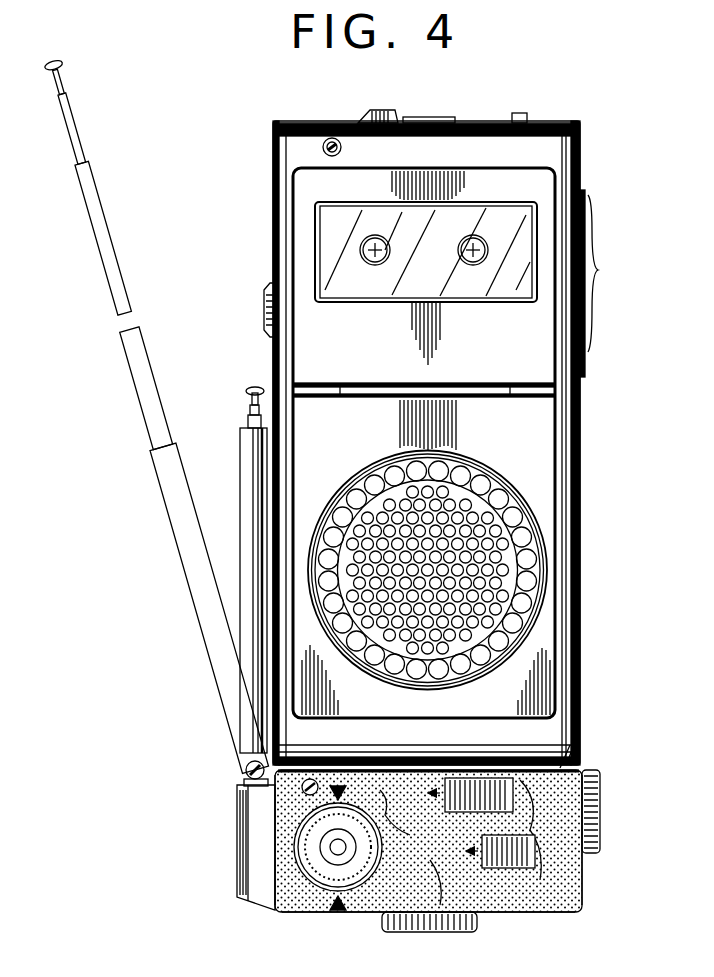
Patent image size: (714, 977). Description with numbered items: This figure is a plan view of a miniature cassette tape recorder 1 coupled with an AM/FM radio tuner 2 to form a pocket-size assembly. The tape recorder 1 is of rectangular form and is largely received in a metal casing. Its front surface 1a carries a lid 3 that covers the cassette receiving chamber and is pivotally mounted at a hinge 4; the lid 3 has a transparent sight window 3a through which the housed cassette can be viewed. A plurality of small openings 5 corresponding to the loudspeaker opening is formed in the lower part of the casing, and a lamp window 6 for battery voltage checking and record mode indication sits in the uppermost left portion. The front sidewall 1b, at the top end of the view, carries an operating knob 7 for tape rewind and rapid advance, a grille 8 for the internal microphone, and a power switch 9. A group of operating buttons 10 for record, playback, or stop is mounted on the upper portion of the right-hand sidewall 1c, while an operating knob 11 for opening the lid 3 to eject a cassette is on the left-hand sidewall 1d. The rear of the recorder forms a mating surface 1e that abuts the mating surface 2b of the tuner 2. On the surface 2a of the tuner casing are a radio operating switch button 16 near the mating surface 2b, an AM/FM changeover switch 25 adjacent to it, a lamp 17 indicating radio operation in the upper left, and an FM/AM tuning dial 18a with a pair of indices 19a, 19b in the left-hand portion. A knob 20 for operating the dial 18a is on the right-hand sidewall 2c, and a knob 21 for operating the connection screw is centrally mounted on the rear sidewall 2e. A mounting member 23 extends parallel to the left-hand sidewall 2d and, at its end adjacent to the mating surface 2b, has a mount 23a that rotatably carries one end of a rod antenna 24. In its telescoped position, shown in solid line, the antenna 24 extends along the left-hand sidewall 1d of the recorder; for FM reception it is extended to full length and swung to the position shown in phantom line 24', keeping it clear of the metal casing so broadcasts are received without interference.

The tape recorder 1 is at (570, 112).
The front surface 1a is at (557, 162).
The front sidewall 1b is at (322, 120).
The right-hand sidewall 1c is at (581, 470).
The left-hand sidewall 1d is at (270, 248).
The mating surface 1e is at (580, 702).
The radio tuner 2 is at (230, 815).
The surface of the tuner casing 2a is at (584, 766).
The mating surface 2b is at (582, 736).
The right-hand sidewall 2c is at (584, 880).
The left-hand sidewall 2d is at (270, 866).
The rear sidewall 2e is at (555, 913).
The lid 3 is at (548, 196).
The transparent sight window 3a is at (500, 210).
The hinge 4 is at (546, 385).
The small openings 5 is at (478, 482).
The lamp window 6 is at (333, 137).
The operating knob 7 is at (386, 110).
The grille 8 is at (428, 117).
The power switch 9 is at (520, 113).
The group of operating buttons 10 is at (607, 283).
The operating knob 11 is at (266, 292).
The radio operating switch button 16 is at (478, 778).
The lamp 17 is at (312, 779).
The FM/AM tuning dial 18a is at (305, 880).
The index 19a is at (340, 786).
The index 19b is at (338, 912).
The knob 20 is at (600, 800).
The knob 21 is at (382, 925).
The mounting member 23 is at (250, 888).
The mount 23a is at (246, 771).
The rod antenna 24 is at (231, 570).
The rod antenna in extended position 24' is at (156, 416).
The AM/FM changeover switch 25 is at (514, 870).